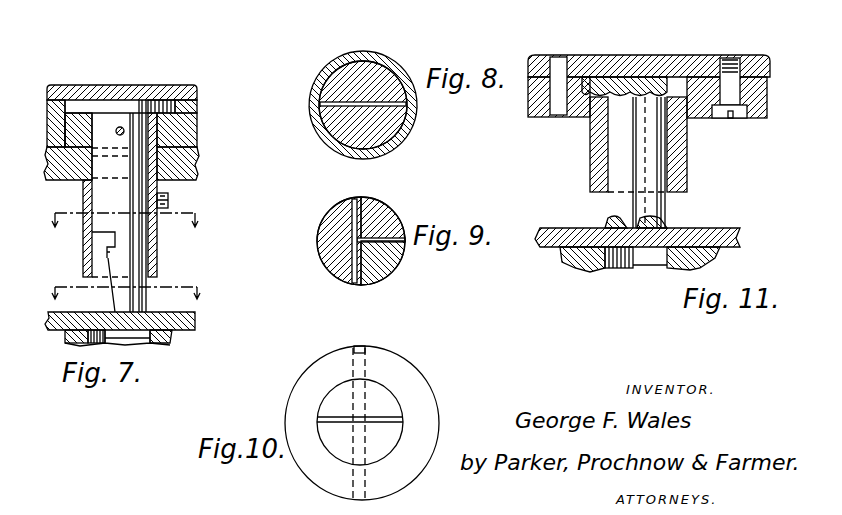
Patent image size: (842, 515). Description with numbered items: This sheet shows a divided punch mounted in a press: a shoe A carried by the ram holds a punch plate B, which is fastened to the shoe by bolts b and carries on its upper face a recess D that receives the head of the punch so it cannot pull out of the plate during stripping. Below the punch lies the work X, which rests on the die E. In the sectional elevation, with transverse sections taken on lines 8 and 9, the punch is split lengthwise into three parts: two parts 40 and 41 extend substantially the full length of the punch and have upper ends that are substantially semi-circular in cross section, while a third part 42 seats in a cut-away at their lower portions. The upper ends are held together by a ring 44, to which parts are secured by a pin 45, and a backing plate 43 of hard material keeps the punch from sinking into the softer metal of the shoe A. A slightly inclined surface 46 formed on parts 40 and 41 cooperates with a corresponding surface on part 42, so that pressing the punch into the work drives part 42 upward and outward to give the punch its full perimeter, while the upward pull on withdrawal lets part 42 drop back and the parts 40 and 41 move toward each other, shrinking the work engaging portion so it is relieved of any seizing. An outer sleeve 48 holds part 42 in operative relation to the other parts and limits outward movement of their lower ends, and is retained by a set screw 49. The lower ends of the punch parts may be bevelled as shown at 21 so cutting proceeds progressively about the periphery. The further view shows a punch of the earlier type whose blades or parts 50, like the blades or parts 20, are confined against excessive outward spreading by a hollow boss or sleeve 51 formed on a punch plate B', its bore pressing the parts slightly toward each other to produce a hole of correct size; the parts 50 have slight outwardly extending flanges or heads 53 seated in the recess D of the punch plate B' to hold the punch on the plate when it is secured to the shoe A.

In FIG. 7, the blades or parts of the punch 20 is at (117, 15).
In FIG. 7, the shoe A is at (78, 73).
In FIG. 11, the shoe A is at (614, 58).
In FIG. 7, the punch plate B is at (141, 140).
In FIG. 11, the punch plate B' is at (647, 68).
In FIG. 11, the passage C is at (553, 93).
In FIG. 7, the recess D is at (63, 128).
In FIG. 11, the recess D is at (576, 63).
In FIG. 7, the die E is at (160, 336).
In FIG. 11, the die E is at (581, 256).
In FIG. 7, the work X is at (196, 322).
In FIG. 11, the work X is at (719, 235).
In FIG. 11, the bolts b is at (738, 119).
In FIG. 7, the section line 8— 8 is at (123, 232).
In FIG. 7, the section line 9— 9 is at (126, 297).
In FIG. 11, the bevelled or inclined lower ends 21 is at (627, 266).
In FIG. 7, the punch part 40 is at (119, 206).
In FIG. 8, the punch part 40 is at (394, 122).
In FIG. 9, the punch part 40 is at (376, 272).
In FIG. 10, the punch part 40 is at (340, 437).
In FIG. 11, the punch part 40 is at (637, 162).
In FIG. 8, the punch part 41 is at (375, 70).
In FIG. 9, the punch part 41 is at (374, 211).
In FIG. 10, the punch part 41 is at (332, 404).
In FIG. 7, the punch part 42 is at (88, 335).
In FIG. 9, the punch part 42 is at (318, 249).
In FIG. 7, the backing plate 43 is at (116, 107).
In FIG. 7, the ring 44 is at (166, 125).
In FIG. 10, the ring 44 is at (393, 373).
In FIG. 7, the pin 45 is at (122, 128).
In FIG. 10, the pin 45 is at (366, 412).
In FIG. 7, the inclined surface 46 is at (110, 263).
In FIG. 9, the inclined surface 46 is at (345, 270).
In FIG. 7, the outer sleeve 48 is at (81, 258).
In FIG. 8, the outer sleeve 48 is at (321, 130).
In FIG. 7, the set screw 49 is at (168, 196).
In FIG. 11, the blades or parts of the punch 50 is at (647, 208).
In FIG. 11, the hollow boss or sleeve 51 is at (598, 155).
In FIG. 11, the flanges or heads 53 is at (661, 75).